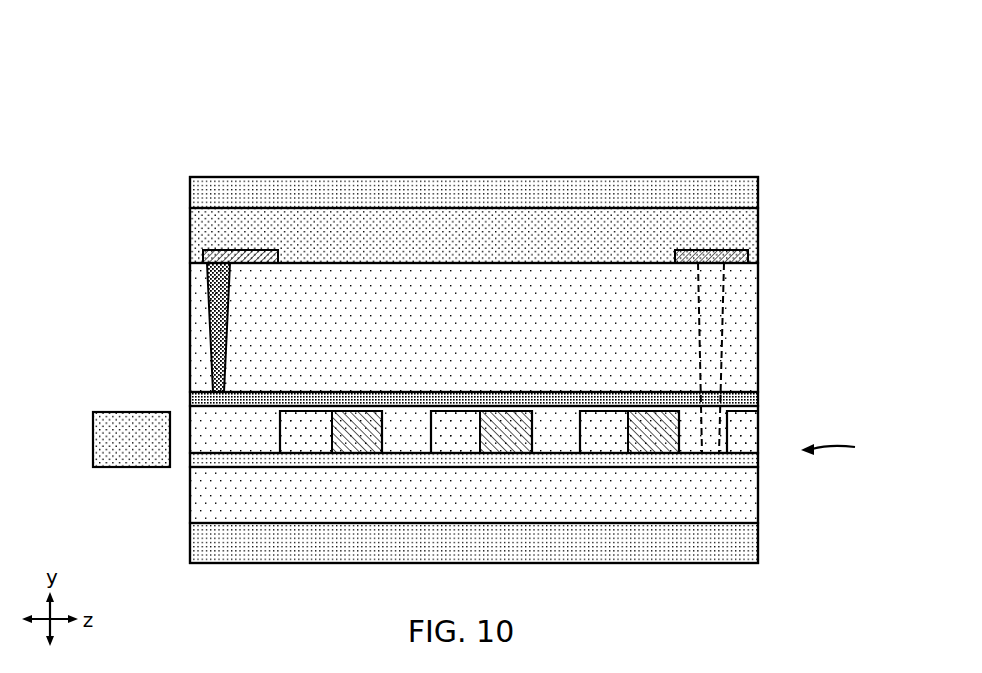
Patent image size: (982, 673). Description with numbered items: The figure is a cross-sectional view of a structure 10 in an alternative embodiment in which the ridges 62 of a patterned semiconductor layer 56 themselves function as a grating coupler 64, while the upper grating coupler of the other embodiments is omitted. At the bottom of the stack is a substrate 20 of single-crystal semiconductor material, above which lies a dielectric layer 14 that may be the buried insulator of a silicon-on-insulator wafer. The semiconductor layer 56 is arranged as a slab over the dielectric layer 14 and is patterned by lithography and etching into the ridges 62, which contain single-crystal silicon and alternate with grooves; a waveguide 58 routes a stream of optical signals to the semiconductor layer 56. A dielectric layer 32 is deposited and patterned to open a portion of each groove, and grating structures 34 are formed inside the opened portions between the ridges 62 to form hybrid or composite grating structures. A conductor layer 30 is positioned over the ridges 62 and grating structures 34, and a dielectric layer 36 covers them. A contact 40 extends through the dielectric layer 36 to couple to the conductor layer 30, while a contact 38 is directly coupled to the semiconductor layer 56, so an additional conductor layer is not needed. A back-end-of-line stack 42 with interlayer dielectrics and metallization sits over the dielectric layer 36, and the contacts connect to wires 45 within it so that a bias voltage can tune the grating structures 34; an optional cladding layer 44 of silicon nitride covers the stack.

The structure 10 is at (105, 63).
The dielectric layer 14 is at (742, 508).
The substrate 20 is at (218, 547).
The conductor layer 30 is at (742, 402).
The dielectric layer 32 is at (692, 433).
The grating structures 34 is at (355, 442).
The dielectric layer 36 is at (198, 339).
The contact 38 is at (724, 290).
The contact 40 is at (217, 291).
The back-end-of-line stack 42 is at (737, 226).
The cladding layer 44 is at (217, 192).
The wire 45 is at (208, 254).
The semiconductor layer 56 is at (723, 462).
The waveguide 58 is at (110, 443).
The ridges 62 is at (297, 430).
The grating coupler 64 is at (841, 447).